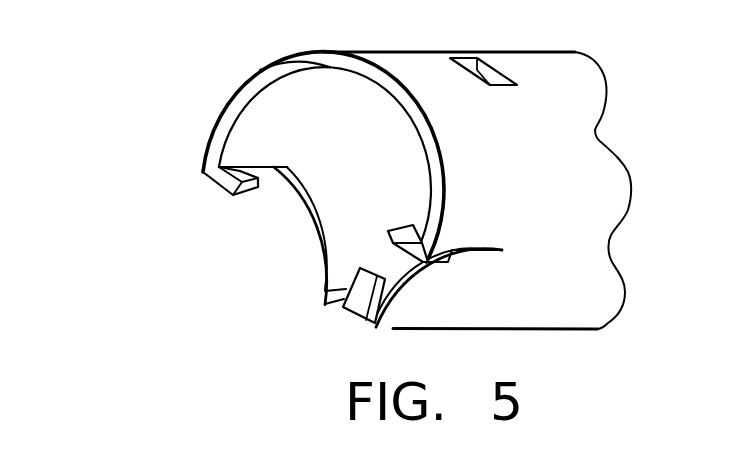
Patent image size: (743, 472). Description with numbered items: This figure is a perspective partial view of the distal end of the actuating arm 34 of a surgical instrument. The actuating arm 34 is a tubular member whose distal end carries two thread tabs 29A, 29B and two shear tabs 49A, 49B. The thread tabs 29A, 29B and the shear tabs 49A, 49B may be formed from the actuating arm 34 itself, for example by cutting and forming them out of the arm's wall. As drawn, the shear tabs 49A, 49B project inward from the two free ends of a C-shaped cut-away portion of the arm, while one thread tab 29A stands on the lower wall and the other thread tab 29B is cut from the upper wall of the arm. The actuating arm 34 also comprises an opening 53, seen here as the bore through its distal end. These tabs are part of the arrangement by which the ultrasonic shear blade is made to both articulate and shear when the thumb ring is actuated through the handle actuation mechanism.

The actuating arm 34 is at (572, 168).
The opening 53 is at (287, 95).
The shear tab 49A is at (228, 182).
The shear tab 49B is at (386, 231).
The thread tab 29A is at (357, 310).
The thread tab 29B is at (497, 69).